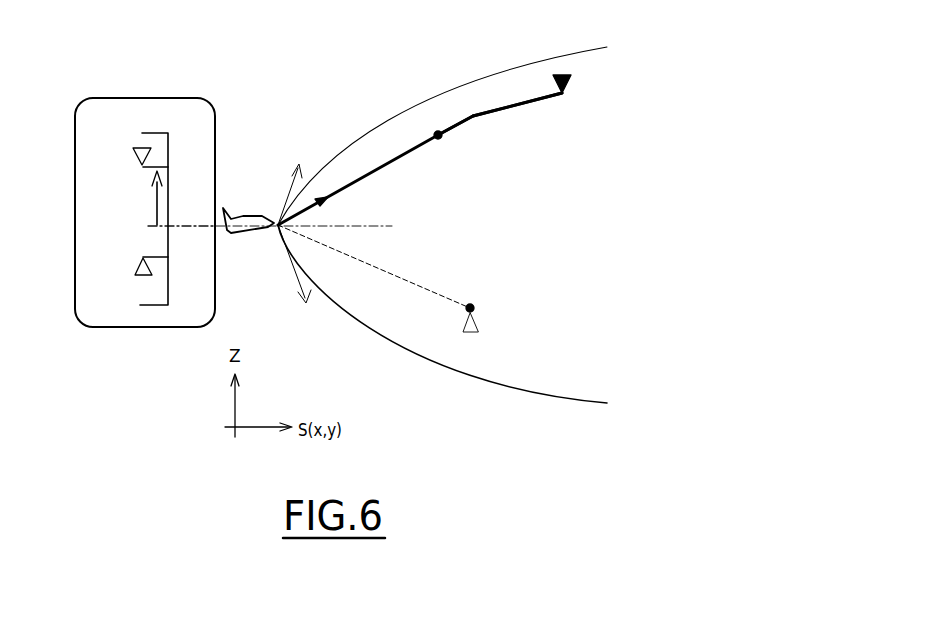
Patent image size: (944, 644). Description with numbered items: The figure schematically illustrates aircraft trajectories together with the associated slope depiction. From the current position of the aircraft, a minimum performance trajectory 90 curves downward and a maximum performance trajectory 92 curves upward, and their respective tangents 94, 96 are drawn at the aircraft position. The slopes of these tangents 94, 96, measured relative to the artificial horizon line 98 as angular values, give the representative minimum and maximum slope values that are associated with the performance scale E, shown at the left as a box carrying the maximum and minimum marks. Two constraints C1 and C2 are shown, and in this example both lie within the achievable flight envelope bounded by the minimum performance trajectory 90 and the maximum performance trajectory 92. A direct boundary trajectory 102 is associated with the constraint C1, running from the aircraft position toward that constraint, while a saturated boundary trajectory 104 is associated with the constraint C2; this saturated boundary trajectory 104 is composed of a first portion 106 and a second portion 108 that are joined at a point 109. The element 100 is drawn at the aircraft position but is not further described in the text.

The performance scale E is at (154, 106).
The constraint C1 is at (513, 337).
The constraint C2 is at (607, 82).
The minimum performance trajectory 90 is at (507, 383).
The maximum performance trajectory 92 is at (530, 58).
The tangent 94 is at (292, 275).
The tangent 96 is at (289, 182).
The artificial horizon line 98 is at (195, 225).
The nozzle / injector 100 is at (257, 217).
The direct boundary trajectory 102 is at (409, 280).
The saturated boundary trajectory 104 is at (519, 111).
The first portion 106 is at (366, 178).
The second portion 108 is at (475, 114).
The point 109 is at (437, 131).